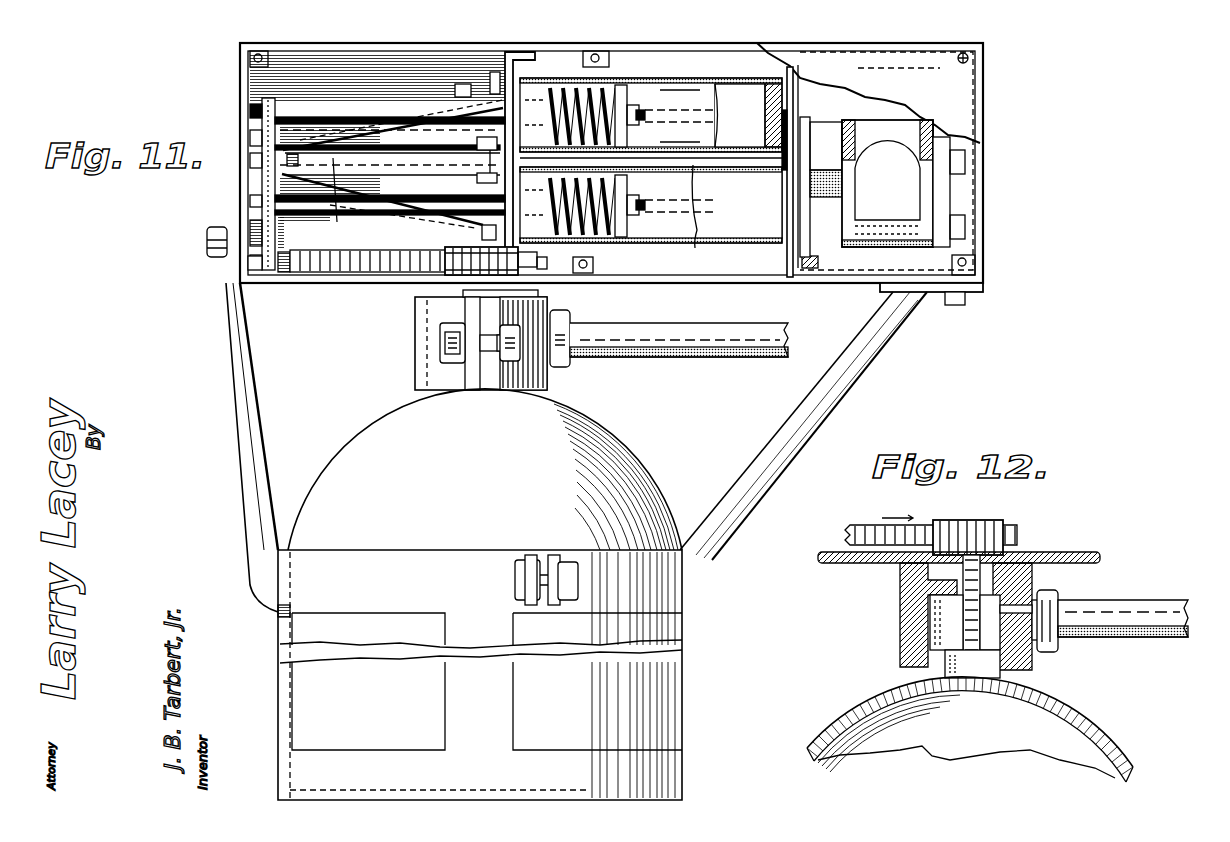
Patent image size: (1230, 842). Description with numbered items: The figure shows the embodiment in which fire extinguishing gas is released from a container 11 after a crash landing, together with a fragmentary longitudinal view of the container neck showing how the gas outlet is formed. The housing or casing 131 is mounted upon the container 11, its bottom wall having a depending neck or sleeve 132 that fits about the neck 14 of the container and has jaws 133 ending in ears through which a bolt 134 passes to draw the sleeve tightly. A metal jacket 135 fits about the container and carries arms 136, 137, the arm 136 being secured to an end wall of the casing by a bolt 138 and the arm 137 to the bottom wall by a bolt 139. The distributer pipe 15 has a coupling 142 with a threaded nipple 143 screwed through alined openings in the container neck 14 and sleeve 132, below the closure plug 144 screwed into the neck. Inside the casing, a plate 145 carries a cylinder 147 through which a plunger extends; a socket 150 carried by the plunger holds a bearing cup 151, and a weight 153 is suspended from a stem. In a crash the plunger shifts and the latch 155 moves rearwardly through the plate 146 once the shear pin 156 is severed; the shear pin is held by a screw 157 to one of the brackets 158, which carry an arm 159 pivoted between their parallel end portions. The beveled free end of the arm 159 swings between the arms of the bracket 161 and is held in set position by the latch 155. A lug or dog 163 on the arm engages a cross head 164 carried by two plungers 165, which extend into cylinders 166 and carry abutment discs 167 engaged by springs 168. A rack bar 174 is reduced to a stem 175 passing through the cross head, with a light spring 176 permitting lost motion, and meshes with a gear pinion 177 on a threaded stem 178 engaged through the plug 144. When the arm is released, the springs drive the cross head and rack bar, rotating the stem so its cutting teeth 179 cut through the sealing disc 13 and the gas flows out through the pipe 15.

In FIG. 11, the container 11 is at (653, 500).
In FIG. 12, the container 11 is at (1097, 722).
In FIG. 11, the sealing disc 13 is at (240, 70).
In FIG. 12, the sealing disc 13 is at (986, 662).
In FIG. 11, the neck of the container 14 is at (478, 375).
In FIG. 12, the neck of the container 14 is at (900, 617).
In FIG. 11, the distributer pipe 15 is at (695, 355).
In FIG. 12, the distributer pipe 15 is at (1148, 612).
In FIG. 11, the housing or casing 131 is at (243, 157).
In FIG. 11, the depending neck or sleeve 132 is at (420, 318).
In FIG. 12, the depending neck or sleeve 132 is at (900, 583).
In FIG. 11, the jaws 133 is at (443, 375).
In FIG. 11, the bolt 134 is at (440, 345).
In FIG. 11, the metal jacket 135 is at (423, 570).
In FIG. 11, the arm 136 is at (238, 392).
In FIG. 11, the arm 137 is at (840, 400).
In FIG. 11, the bolt 138 is at (210, 246).
In FIG. 11, the bolt 139 is at (958, 298).
In FIG. 12, the coupling 142 is at (1055, 606).
In FIG. 12, the threaded nipple 143 is at (1035, 612).
In FIG. 12, the closure plug 144 is at (1002, 565).
In FIG. 11, the plate 145 is at (798, 236).
In FIG. 11, the plate 146 is at (505, 56).
In FIG. 11, the cylinder 147 is at (627, 225).
In FIG. 11, the socket 150 is at (818, 140).
In FIG. 11, the bearing cup 151 is at (883, 130).
In FIG. 11, the weight 153 is at (887, 183).
In FIG. 11, the latch 155 is at (480, 140).
In FIG. 11, the shear pin 156 is at (503, 130).
In FIG. 11, the screw 157 is at (457, 88).
In FIG. 11, the brackets 158 is at (353, 187).
In FIG. 11, the arm 159 is at (337, 200).
In FIG. 11, the bracket 161 is at (477, 180).
In FIG. 11, the lug or dog 163 is at (287, 160).
In FIG. 11, the cross head 164 is at (268, 128).
In FIG. 11, the plungers 165 is at (393, 112).
In FIG. 11, the cylinders 166 is at (748, 161).
In FIG. 11, the abutment discs 167 is at (647, 165).
In FIG. 11, the springs 168 is at (603, 79).
In FIG. 11, the rack bar 174 is at (358, 270).
In FIG. 12, the rack bar 174 is at (867, 533).
In FIG. 11, the stem 175 is at (250, 264).
In FIG. 11, the light spring 176 is at (282, 262).
In FIG. 11, the gear pinion 177 is at (496, 261).
In FIG. 12, the gear pinion 177 is at (965, 525).
In FIG. 12, the threaded stem 178 is at (900, 640).
In FIG. 12, the cutting teeth 179 is at (903, 657).